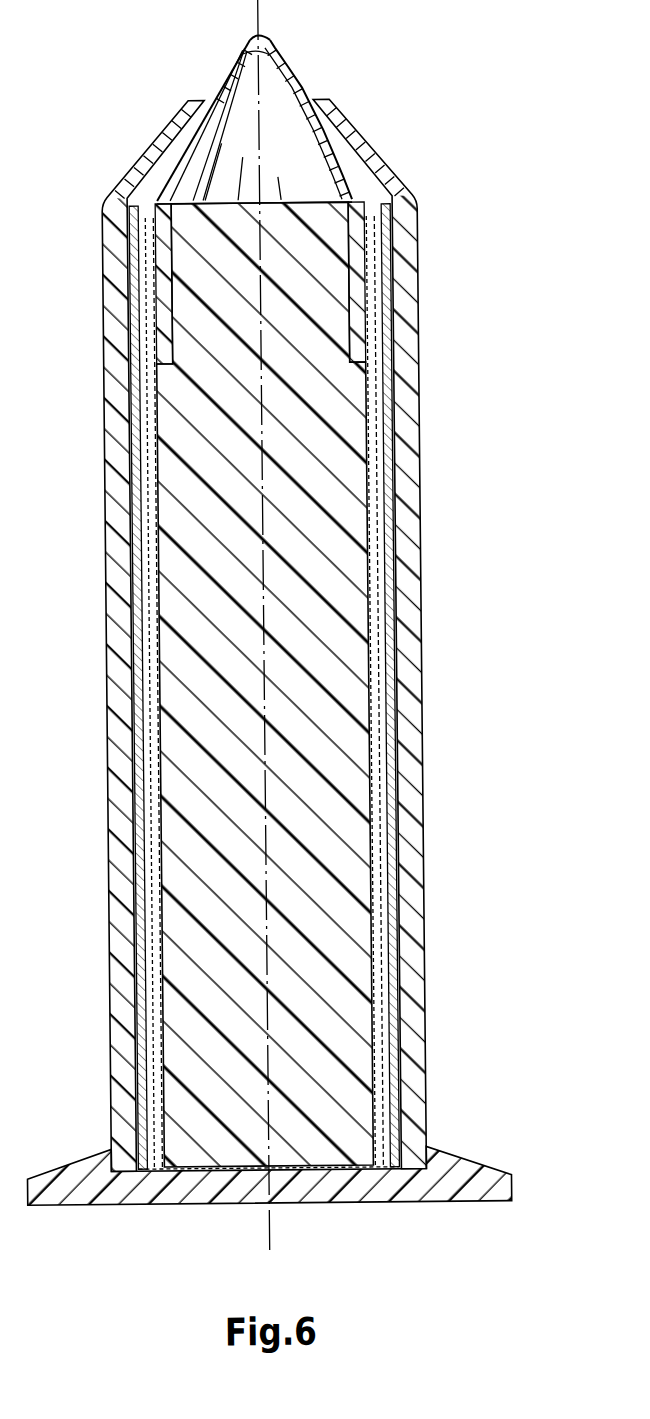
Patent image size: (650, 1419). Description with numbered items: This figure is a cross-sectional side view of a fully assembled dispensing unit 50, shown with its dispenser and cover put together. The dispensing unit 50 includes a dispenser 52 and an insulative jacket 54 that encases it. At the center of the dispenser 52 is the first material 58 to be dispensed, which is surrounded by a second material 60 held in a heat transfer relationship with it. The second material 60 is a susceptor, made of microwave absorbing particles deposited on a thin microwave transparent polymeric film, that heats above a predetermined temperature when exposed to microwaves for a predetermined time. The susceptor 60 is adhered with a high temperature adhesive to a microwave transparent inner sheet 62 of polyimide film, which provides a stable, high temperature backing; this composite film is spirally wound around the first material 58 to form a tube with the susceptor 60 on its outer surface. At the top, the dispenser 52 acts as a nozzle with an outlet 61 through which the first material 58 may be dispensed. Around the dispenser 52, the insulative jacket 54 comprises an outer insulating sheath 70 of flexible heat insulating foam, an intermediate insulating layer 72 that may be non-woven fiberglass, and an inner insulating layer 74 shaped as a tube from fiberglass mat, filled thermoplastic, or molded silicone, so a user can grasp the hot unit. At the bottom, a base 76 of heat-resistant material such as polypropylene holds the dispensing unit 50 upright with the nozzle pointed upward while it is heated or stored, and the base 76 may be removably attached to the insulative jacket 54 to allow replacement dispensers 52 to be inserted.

The dispensing unit 50 is at (374, 87).
The dispenser 52 is at (148, 200).
The insulative jacket 54 is at (427, 842).
The first material 58 is at (321, 437).
The second material 60 is at (150, 278).
The outlet 61 is at (252, 37).
The inner sheet 62 is at (392, 1000).
The outer insulating sheath 70 is at (410, 498).
The intermediate insulating layer 72 is at (392, 650).
The inner insulating layer 74 is at (391, 905).
The base 76 is at (163, 1193).